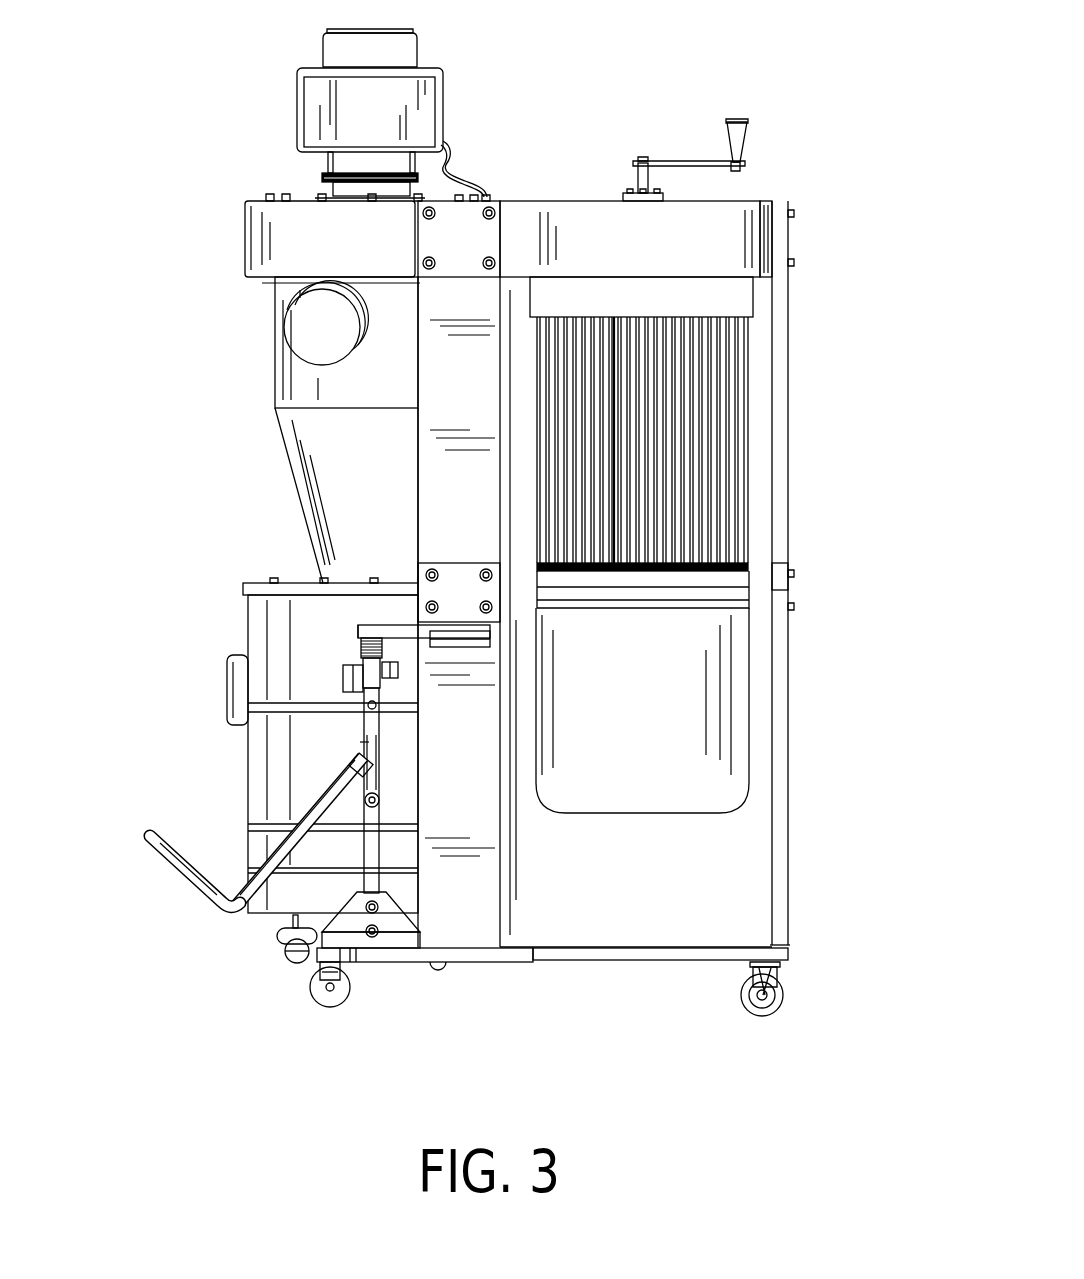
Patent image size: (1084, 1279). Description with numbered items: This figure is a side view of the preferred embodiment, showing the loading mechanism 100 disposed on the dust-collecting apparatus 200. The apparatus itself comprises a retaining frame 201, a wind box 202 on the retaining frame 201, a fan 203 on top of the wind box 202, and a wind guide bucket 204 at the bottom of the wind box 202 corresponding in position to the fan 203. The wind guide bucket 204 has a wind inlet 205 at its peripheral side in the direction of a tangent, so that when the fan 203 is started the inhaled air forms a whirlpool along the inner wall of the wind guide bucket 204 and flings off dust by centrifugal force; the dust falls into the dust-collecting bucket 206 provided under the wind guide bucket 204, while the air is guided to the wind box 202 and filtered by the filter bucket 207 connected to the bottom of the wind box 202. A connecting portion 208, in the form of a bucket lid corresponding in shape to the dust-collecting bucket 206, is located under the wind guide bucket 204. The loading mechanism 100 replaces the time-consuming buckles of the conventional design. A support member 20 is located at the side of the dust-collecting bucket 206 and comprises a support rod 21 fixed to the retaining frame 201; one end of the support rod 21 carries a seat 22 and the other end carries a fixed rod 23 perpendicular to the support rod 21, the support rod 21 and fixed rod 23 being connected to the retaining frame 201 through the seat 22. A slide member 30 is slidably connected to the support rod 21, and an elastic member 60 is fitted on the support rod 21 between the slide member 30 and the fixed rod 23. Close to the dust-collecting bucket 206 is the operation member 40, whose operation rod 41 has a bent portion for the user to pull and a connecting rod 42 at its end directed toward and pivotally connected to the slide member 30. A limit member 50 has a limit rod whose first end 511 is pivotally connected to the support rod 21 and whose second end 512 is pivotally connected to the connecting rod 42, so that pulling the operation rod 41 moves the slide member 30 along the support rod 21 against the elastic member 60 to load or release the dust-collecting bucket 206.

The dust-collecting apparatus 200 is at (493, 551).
The retaining frame 201 is at (780, 545).
The wind box 202 is at (578, 207).
The fan 203 is at (410, 52).
The wind guide bucket 204 is at (283, 387).
The wind inlet 205 is at (300, 320).
The dust-collecting bucket 206 is at (257, 640).
The filter bucket 207 is at (732, 400).
The connecting portion 208 is at (258, 590).
The support member 20 is at (388, 882).
The support rod 21 is at (373, 845).
The seat 22 is at (357, 937).
The fixed rod 23 is at (367, 630).
The slide member 30 is at (357, 660).
The limit member 50 is at (271, 790).
The first end 511 is at (368, 793).
The second end 512 is at (357, 740).
The elastic member 60 is at (356, 643).
The operation member 40 is at (195, 938).
The operation rod 41 is at (177, 872).
The connecting rod 42 is at (268, 873).
The loading mechanism 100 is at (144, 829).